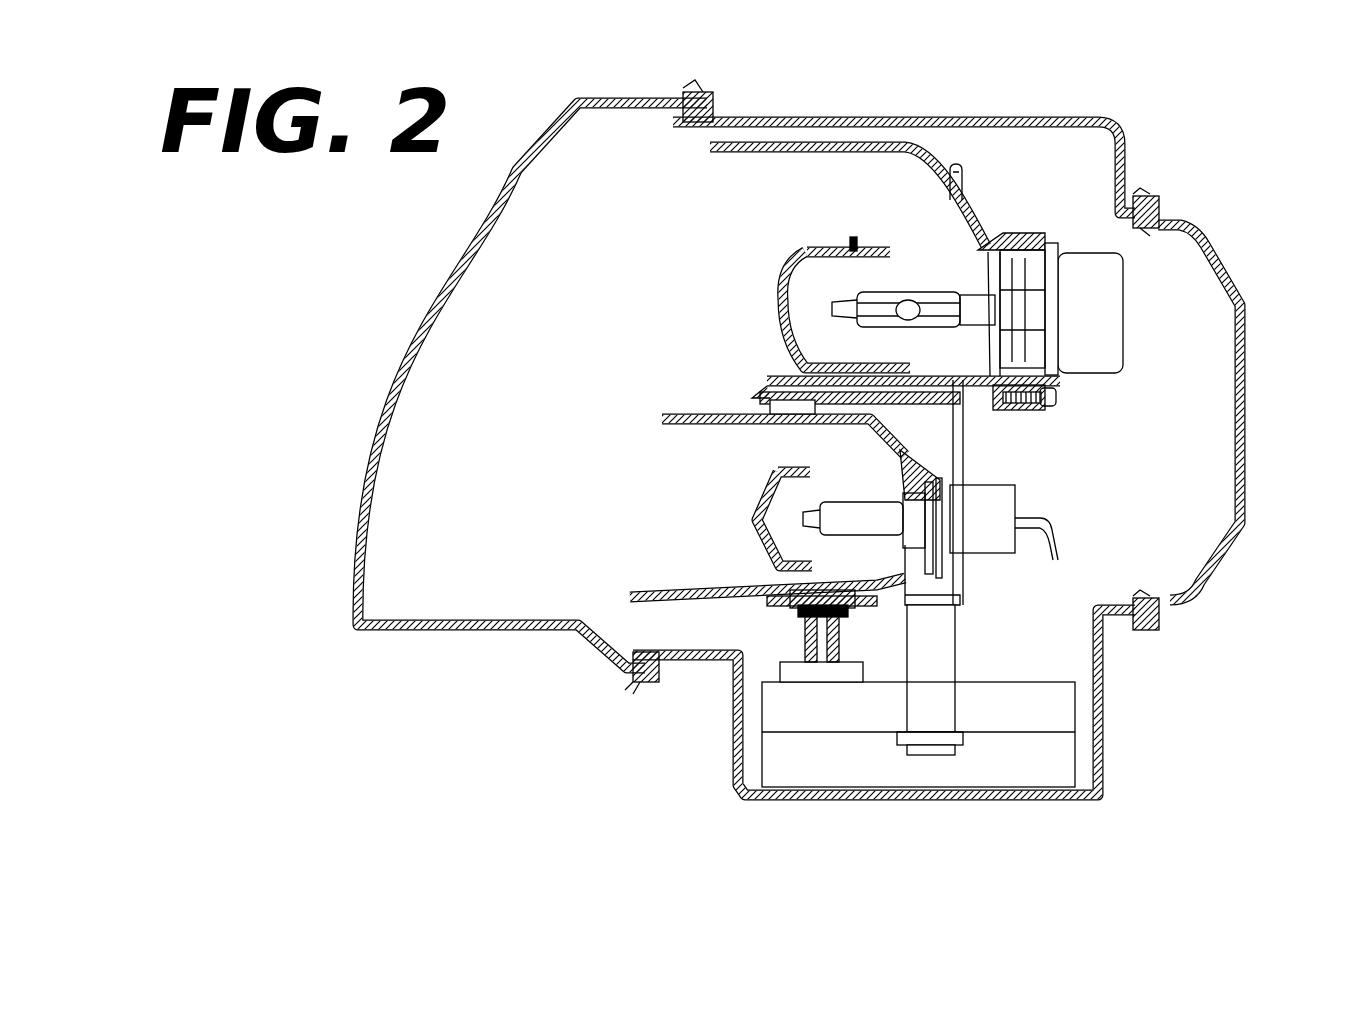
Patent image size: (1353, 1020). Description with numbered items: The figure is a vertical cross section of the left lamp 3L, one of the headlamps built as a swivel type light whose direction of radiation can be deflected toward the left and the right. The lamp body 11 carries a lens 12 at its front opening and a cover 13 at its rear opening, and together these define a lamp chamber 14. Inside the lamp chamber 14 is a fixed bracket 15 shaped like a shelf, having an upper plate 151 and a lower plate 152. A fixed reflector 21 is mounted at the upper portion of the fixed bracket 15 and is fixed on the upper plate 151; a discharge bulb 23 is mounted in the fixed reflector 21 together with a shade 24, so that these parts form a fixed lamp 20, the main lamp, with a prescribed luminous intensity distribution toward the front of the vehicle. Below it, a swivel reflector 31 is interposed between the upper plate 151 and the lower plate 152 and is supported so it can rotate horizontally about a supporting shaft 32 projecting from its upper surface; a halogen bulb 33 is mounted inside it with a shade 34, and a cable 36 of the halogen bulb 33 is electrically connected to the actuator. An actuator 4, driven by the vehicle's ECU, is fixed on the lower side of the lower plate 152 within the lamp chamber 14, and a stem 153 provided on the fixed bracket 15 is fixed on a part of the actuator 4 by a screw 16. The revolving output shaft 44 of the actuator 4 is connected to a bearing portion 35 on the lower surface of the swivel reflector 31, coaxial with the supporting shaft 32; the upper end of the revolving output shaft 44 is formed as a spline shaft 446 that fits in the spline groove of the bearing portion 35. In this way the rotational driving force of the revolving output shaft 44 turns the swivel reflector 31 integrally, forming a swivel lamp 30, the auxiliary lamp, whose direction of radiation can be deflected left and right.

The left lamp 3L is at (1125, 96).
The actuator 4 is at (1018, 740).
The lamp body 11 is at (1125, 172).
The lens 12 is at (392, 380).
The cover 13 is at (1246, 360).
The lamp chamber 14 is at (442, 605).
The fixed bracket 15 is at (975, 126).
The screw 16 is at (935, 756).
The fixed lamp 20 is at (760, 140).
The fixed reflector 21 is at (956, 163).
The discharge bulb 23 is at (912, 305).
The shade 24 is at (806, 256).
The swivel lamp 30 is at (622, 626).
The swivel reflector 31 is at (728, 425).
The supporting shaft 32 is at (762, 402).
The halogen bulb 33 is at (856, 520).
The shade 34 is at (772, 500).
The bearing portion 35 is at (748, 623).
The cable 36 is at (1066, 545).
The revolving output shaft 44 is at (850, 645).
The upper plate 151 is at (965, 418).
The lower plate 152 is at (893, 607).
The stem 153 is at (947, 705).
The spline shaft 446 is at (772, 662).